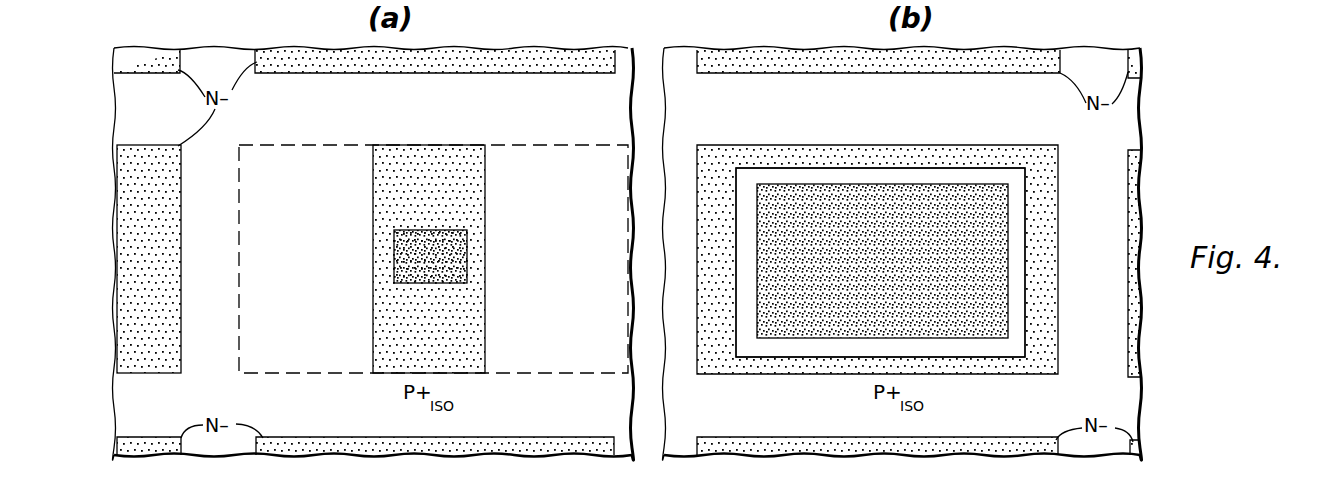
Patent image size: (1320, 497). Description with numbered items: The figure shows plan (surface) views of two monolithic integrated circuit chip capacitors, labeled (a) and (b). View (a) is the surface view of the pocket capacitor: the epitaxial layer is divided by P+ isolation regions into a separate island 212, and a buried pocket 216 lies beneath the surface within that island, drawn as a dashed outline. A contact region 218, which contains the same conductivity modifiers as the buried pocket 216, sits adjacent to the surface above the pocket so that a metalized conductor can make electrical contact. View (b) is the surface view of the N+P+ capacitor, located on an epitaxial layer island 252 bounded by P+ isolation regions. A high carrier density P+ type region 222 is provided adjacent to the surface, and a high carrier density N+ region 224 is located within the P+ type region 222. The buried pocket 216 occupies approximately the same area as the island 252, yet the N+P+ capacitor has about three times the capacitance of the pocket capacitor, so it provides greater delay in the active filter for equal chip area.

The island 212 is at (372, 206).
The buried pocket 216 is at (550, 146).
The contact region 218 is at (424, 240).
The P+ type region 222 is at (865, 173).
The N+ region 224 is at (990, 192).
The island 252 is at (762, 155).